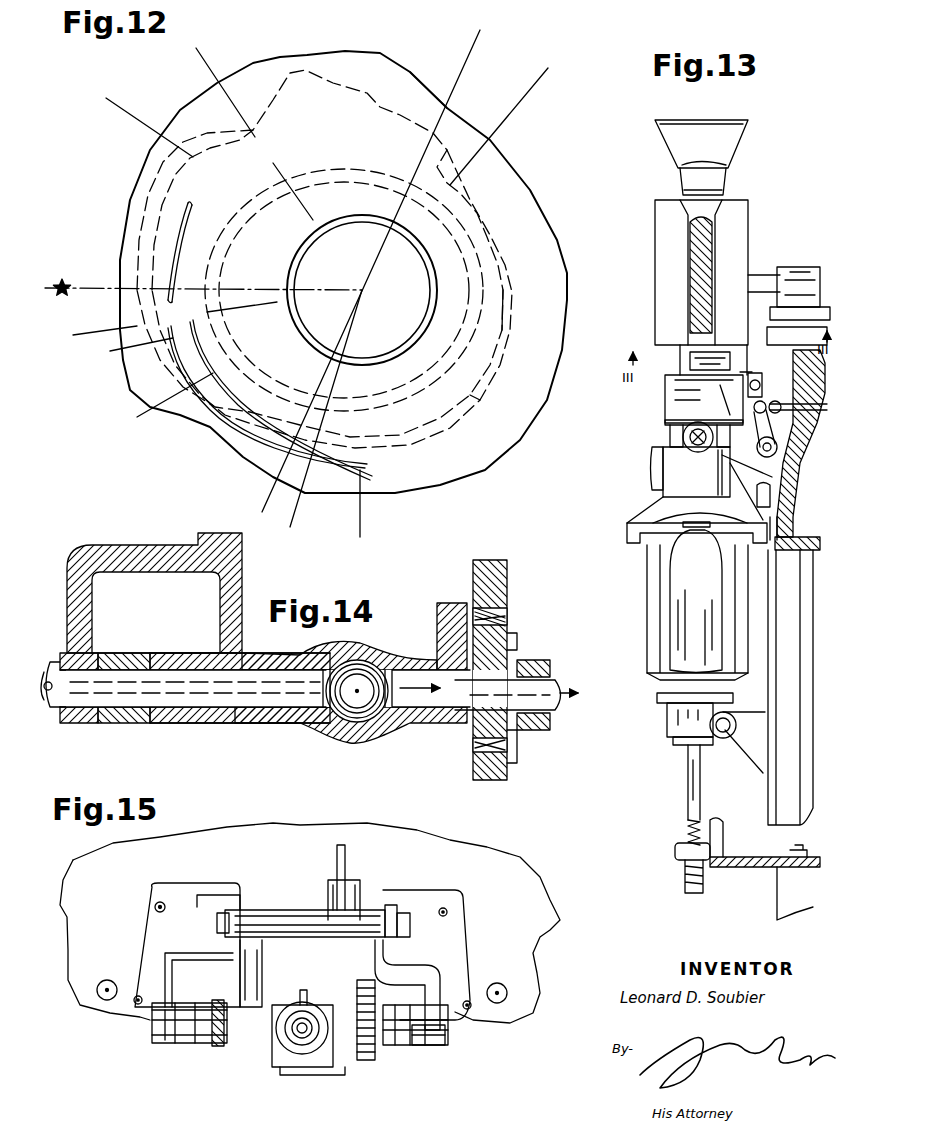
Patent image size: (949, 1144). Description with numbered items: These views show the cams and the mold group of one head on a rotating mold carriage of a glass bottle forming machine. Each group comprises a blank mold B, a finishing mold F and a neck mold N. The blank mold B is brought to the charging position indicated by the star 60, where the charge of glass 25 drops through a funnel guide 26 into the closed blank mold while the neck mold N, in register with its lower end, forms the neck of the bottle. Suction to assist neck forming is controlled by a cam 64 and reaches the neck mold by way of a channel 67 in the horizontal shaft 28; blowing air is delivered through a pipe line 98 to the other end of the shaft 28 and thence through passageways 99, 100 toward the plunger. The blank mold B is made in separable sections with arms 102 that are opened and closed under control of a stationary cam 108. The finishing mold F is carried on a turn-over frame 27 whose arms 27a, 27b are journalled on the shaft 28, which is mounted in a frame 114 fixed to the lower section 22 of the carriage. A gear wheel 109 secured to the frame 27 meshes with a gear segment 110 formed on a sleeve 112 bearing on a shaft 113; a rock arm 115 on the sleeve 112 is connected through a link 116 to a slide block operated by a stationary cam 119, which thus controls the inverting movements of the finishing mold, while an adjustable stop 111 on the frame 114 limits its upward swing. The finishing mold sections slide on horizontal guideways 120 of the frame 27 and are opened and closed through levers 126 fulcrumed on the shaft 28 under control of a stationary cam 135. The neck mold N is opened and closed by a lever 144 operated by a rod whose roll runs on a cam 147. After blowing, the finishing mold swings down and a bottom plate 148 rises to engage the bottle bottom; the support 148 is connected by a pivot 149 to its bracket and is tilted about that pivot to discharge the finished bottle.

In FIG. 13, the lower section 22 is at (805, 537).
In FIG. 15, the lower section 22 is at (530, 967).
In FIG. 13, the charge of glass 25 is at (687, 247).
In FIG. 13, the funnel guide 26 is at (737, 143).
In FIG. 13, the turn-over frame 27 is at (647, 503).
In FIG. 14, the arm 27a is at (533, 727).
In FIG. 15, the arm 27a is at (395, 1050).
In FIG. 14, the arm 27b is at (180, 723).
In FIG. 15, the arm 27b is at (220, 1043).
In FIG. 13, the horizontal shaft 28 is at (683, 436).
In FIG. 14, the horizontal shaft 28 is at (520, 687).
In FIG. 12, the star 60 is at (262, 283).
In FIG. 12, the cam 64 is at (185, 228).
In FIG. 14, the channel 67 is at (443, 695).
In FIG. 14, the pipe line 98 is at (45, 665).
In FIG. 14, the passageway 99 is at (300, 712).
In FIG. 14, the passageway 100 is at (340, 652).
In FIG. 13, the arm 102 is at (763, 280).
In FIG. 12, the stationary cam 108 is at (503, 157).
In FIG. 14, the gear wheel 109 is at (500, 782).
In FIG. 15, the gear wheel 109 is at (372, 1062).
In FIG. 15, the gear segment 110 is at (370, 970).
In FIG. 13, the adjustable stop 111 is at (757, 366).
In FIG. 15, the sleeve 112 is at (370, 905).
In FIG. 15, the shaft 113 is at (410, 925).
In FIG. 14, the frame 114 is at (242, 590).
In FIG. 15, the frame 114 is at (440, 965).
In FIG. 15, the rock arm 115 is at (360, 880).
In FIG. 15, the link 116 is at (335, 855).
In FIG. 12, the stationary cam 119 is at (436, 386).
In FIG. 13, the horizontal guideways 120 is at (627, 530).
In FIG. 14, the lever 126 is at (120, 653).
In FIG. 15, the lever 126 is at (182, 1003).
In FIG. 12, the stationary cam 135 is at (510, 283).
In FIG. 13, the lever 144 is at (779, 415).
In FIG. 12, the cam 147 is at (257, 452).
In FIG. 13, the bottom plate 148 is at (670, 698).
In FIG. 13, the pivot 149 is at (723, 737).
In FIG. 13, the blank mold B is at (737, 247).
In FIG. 13, the finishing mold F is at (660, 587).
In FIG. 15, the neck mold N is at (280, 1047).